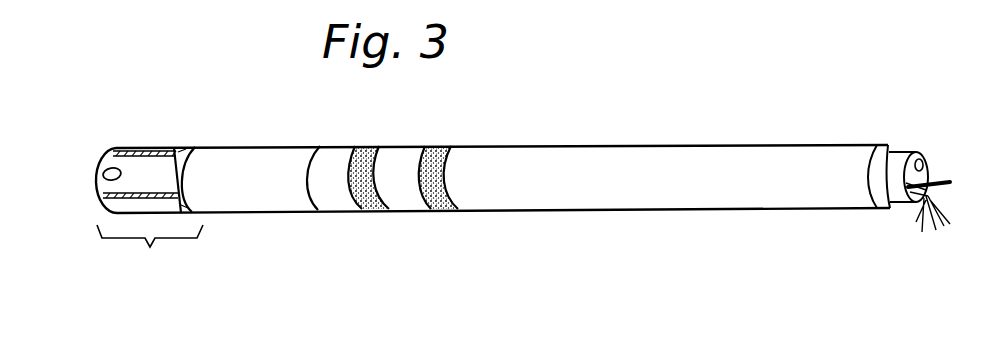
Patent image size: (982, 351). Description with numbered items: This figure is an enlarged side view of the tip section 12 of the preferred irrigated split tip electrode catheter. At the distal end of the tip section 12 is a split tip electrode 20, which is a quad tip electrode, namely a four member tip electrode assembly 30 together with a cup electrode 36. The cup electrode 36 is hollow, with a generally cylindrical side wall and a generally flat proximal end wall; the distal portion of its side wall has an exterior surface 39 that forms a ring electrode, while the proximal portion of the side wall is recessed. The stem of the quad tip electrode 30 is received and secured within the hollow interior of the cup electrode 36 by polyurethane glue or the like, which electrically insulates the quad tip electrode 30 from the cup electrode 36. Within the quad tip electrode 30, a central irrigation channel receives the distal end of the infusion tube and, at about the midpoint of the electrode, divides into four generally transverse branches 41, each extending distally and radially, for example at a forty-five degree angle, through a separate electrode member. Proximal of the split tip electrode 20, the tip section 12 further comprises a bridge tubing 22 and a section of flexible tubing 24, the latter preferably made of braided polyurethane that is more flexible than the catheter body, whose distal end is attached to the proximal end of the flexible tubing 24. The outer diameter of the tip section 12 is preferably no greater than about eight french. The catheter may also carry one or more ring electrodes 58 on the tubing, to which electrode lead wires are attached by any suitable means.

The tip section 12 is at (546, 118).
The split tip electrode 20 is at (150, 255).
The bridge tubing 22 is at (262, 146).
The flexible tubing 24 is at (483, 144).
The quad tip electrode 30 is at (158, 147).
The cup electrode 36 is at (198, 146).
The exterior surface 39 is at (174, 147).
The transverse branches 41 is at (113, 146).
The ring electrodes 58 is at (380, 144).